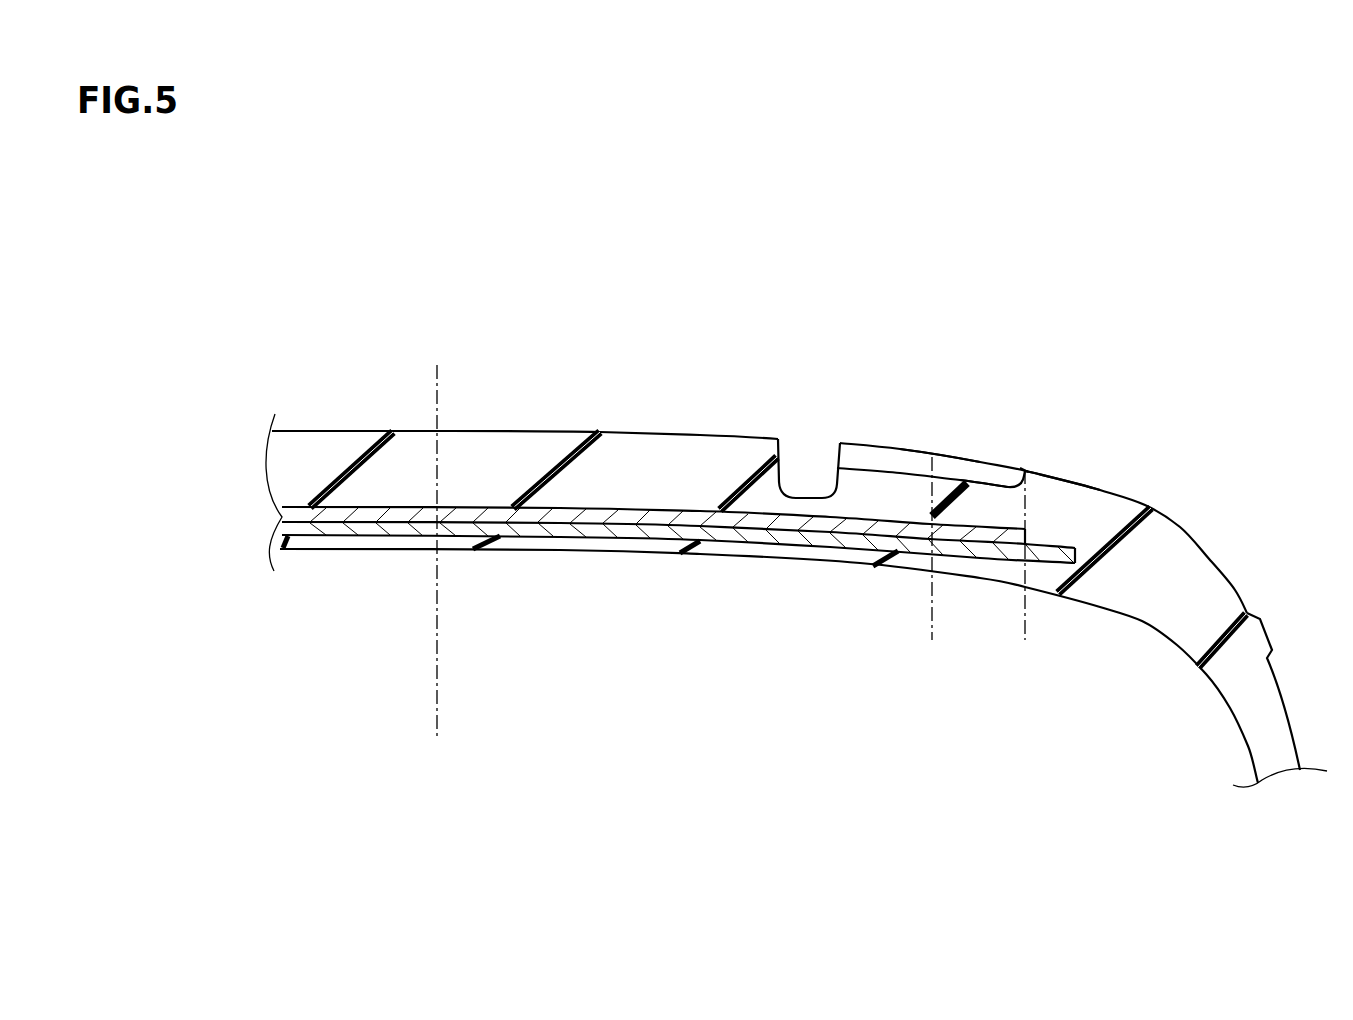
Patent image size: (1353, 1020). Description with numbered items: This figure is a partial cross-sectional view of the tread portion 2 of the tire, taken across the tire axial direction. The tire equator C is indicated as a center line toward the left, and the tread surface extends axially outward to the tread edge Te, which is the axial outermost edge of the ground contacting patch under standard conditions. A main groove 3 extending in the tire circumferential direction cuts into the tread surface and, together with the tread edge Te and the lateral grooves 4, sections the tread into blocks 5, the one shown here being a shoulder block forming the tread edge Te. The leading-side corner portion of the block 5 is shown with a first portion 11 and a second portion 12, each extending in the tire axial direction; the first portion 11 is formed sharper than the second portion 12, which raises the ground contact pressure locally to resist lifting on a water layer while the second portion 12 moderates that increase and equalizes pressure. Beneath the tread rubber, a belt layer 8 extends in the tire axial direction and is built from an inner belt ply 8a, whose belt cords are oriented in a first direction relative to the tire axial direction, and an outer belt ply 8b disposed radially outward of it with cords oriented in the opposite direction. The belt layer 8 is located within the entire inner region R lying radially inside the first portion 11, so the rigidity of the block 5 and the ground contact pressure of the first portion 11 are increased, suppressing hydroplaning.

The tread portion 2 is at (1173, 345).
The main groove 3 is at (800, 436).
The lateral groove 4 is at (920, 439).
The block 5 is at (1024, 416).
The belt layer 8 is at (678, 604).
The inner belt ply 8a is at (757, 536).
The outer belt ply 8b is at (657, 518).
The first portion 11 is at (983, 472).
The second portion 12 is at (869, 458).
The tire equator C is at (437, 536).
The tread edge Te is at (1023, 471).
The inner region R is at (1025, 638).